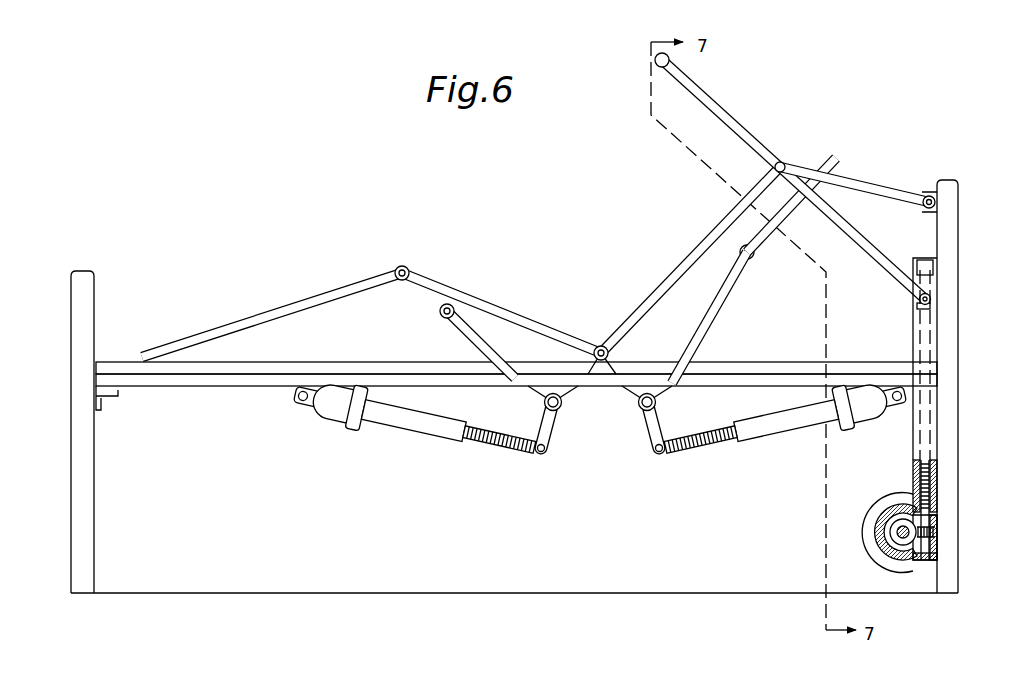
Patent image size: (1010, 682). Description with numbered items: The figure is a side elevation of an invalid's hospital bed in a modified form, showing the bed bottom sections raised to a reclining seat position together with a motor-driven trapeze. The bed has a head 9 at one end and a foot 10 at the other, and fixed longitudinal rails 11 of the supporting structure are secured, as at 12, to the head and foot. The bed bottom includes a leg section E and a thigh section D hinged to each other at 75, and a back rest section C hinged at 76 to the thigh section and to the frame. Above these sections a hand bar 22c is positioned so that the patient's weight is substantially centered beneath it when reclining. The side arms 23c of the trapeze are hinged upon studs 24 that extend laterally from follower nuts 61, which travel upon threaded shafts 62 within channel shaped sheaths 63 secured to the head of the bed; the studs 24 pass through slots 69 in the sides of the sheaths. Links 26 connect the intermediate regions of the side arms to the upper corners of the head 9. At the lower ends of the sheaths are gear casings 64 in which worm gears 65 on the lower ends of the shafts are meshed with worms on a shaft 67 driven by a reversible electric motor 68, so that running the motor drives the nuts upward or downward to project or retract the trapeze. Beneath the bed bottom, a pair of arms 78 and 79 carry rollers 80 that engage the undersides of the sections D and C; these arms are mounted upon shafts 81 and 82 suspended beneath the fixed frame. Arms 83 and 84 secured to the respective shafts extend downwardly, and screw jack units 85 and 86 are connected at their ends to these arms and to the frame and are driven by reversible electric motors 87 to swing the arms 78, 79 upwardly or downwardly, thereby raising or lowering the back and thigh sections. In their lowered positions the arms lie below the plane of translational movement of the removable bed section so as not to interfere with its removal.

The head 9 is at (957, 188).
The foot 10 is at (80, 443).
The rail 11 is at (204, 388).
The securing means 12 is at (103, 394).
The hand bar 22c is at (656, 58).
The side arms 23c is at (730, 120).
The studs 24 is at (917, 300).
The links 26 is at (876, 188).
The follower nuts 61 is at (936, 307).
The threaded shafts 62 is at (912, 472).
The channel shaped sheaths 63 is at (912, 321).
The gear casings 64 is at (880, 545).
The worm gears 65 is at (938, 532).
The shaft 67 is at (897, 527).
The electric motor 68 is at (866, 528).
The slots 69 is at (935, 345).
The hinge 75 is at (402, 266).
The hinge 76 is at (601, 345).
The arm 78 is at (724, 314).
The arm 79 is at (456, 340).
The rollers 80 is at (440, 314).
The shaft 81 is at (660, 403).
The shaft 82 is at (543, 404).
The arm 83 is at (650, 430).
The arm 84 is at (552, 437).
The screw jack unit 85 is at (781, 428).
The screw jack unit 86 is at (417, 430).
The reversible electric motors 87 is at (330, 414).
The back rest section C is at (698, 264).
The thigh section D is at (520, 312).
The leg section E is at (275, 303).